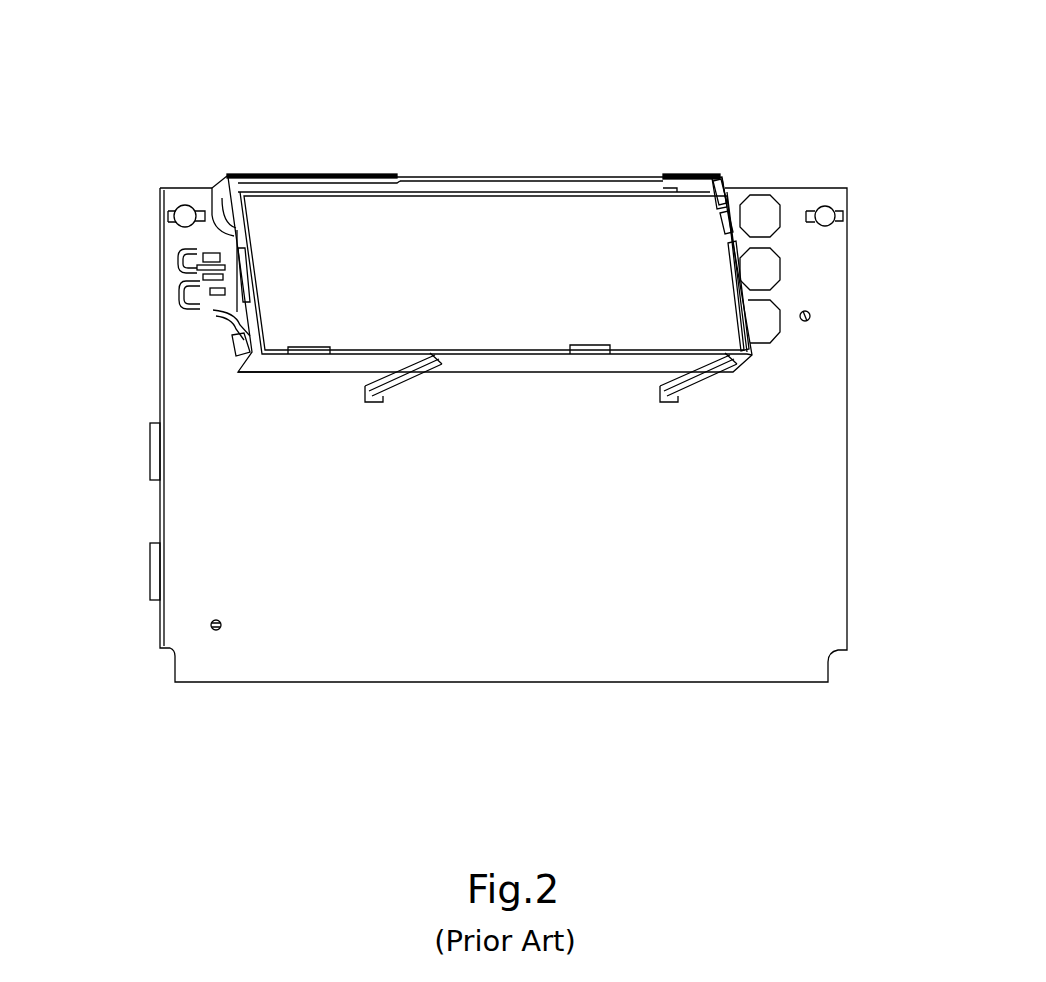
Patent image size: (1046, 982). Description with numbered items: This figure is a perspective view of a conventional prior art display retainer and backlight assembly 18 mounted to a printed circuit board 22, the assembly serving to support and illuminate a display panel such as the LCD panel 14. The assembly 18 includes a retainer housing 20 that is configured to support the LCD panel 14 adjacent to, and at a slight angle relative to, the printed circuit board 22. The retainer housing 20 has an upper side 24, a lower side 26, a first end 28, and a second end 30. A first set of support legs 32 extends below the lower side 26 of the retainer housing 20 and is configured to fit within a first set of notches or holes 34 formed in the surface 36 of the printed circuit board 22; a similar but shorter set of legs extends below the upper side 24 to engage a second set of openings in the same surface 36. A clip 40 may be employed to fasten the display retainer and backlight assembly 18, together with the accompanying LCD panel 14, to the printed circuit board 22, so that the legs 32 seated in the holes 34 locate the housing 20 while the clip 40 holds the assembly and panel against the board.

The LCD panel 14 is at (710, 333).
The display retainer and backlight assembly 18 is at (300, 95).
The retainer housing 20 is at (224, 394).
The printed circuit board 22 is at (828, 548).
The upper side 24 is at (571, 153).
The lower side 26 is at (313, 400).
The first end 28 is at (199, 357).
The second end 30 is at (757, 242).
The first set of support legs 32 is at (398, 388).
The first set of notches or holes 34 is at (383, 397).
The surface 36 is at (668, 590).
The clip 40 is at (635, 187).